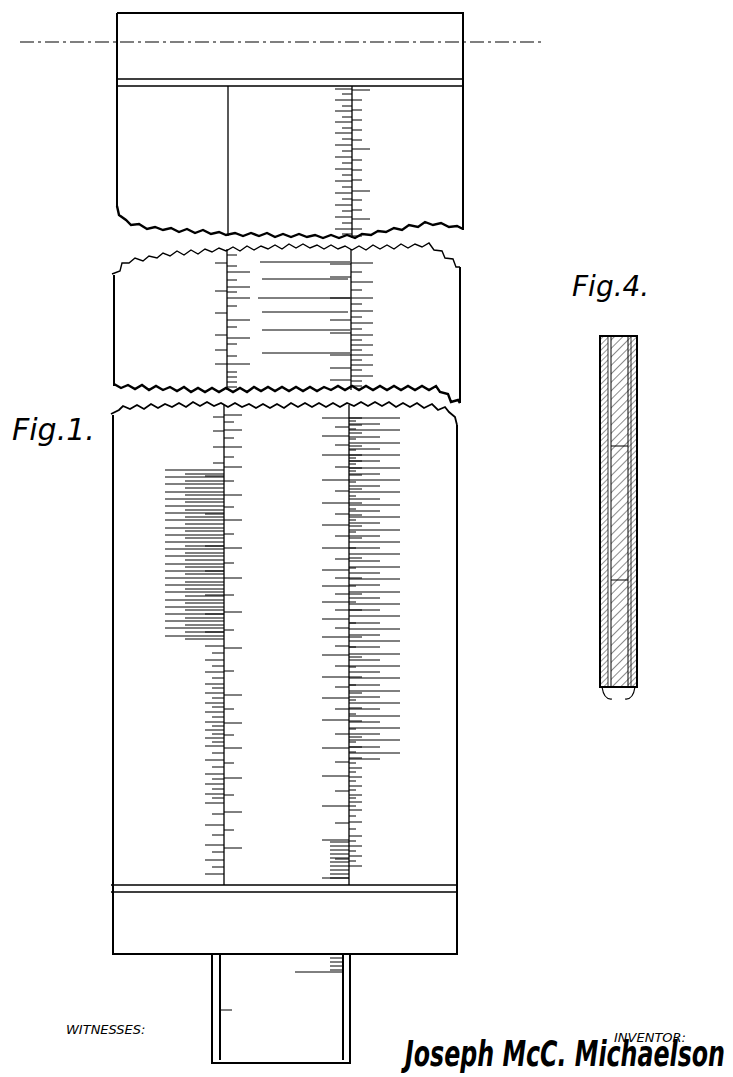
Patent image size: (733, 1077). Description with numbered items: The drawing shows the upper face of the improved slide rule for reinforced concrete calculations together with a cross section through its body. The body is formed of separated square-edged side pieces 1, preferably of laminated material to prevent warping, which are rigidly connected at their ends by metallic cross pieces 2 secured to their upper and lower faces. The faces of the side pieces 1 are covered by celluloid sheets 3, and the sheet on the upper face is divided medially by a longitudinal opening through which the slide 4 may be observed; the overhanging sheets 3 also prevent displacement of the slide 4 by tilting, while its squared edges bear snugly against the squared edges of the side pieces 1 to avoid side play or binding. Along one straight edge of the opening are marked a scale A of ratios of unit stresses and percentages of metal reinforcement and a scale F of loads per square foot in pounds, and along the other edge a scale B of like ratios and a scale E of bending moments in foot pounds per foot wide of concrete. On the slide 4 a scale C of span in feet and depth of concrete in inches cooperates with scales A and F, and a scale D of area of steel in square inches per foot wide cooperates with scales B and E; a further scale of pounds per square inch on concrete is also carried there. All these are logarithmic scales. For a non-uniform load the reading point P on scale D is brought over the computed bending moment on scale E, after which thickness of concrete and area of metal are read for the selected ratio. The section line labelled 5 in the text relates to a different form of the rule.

In FIG. 4, the side pieces 1 is at (618, 401).
In FIG. 1, the metallic cross pieces 2 is at (287, 483).
In FIG. 4, the metallic cross pieces 2 is at (600, 353).
In FIG. 1, the celluloid sheets 3 is at (116, 210).
In FIG. 4, the celluloid sheets 3 is at (600, 436).
In FIG. 1, the slide 4 is at (366, 996).
In FIG. 4, the slide 4 is at (630, 482).
In FIG. 1, the top scale 5 is at (356, 180).
In FIG. 1, the scale of ratios of unit stresses and percentages of metal reinforcement A is at (168, 566).
In FIG. 1, the scale of ratios of unit stresses and percentages of metal reinforcement B is at (430, 810).
In FIG. 1, the scale of span and depth C is at (236, 604).
In FIG. 1, the scale of areas D is at (340, 540).
In FIG. 1, the scale of bending moments E is at (402, 708).
In FIG. 1, the scale of loads F is at (170, 840).
In FIG. 1, the reading point P is at (270, 318).